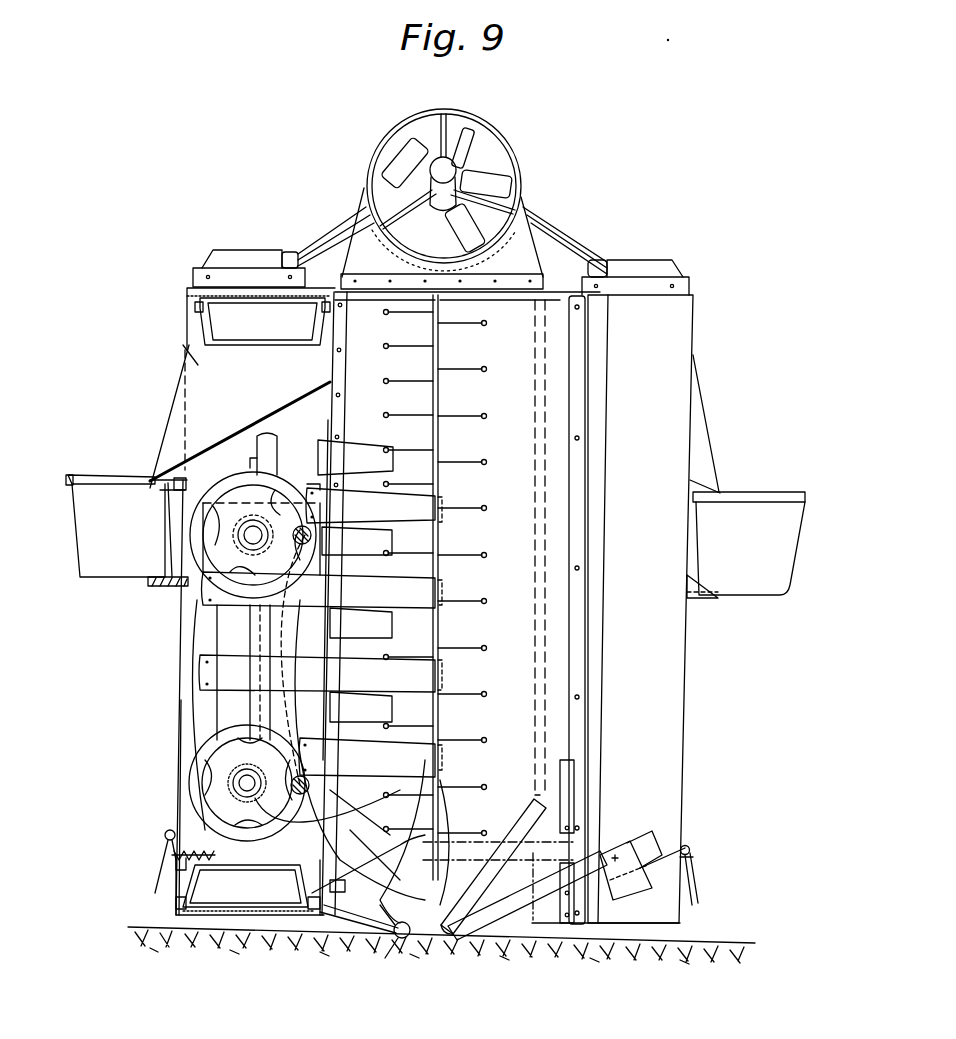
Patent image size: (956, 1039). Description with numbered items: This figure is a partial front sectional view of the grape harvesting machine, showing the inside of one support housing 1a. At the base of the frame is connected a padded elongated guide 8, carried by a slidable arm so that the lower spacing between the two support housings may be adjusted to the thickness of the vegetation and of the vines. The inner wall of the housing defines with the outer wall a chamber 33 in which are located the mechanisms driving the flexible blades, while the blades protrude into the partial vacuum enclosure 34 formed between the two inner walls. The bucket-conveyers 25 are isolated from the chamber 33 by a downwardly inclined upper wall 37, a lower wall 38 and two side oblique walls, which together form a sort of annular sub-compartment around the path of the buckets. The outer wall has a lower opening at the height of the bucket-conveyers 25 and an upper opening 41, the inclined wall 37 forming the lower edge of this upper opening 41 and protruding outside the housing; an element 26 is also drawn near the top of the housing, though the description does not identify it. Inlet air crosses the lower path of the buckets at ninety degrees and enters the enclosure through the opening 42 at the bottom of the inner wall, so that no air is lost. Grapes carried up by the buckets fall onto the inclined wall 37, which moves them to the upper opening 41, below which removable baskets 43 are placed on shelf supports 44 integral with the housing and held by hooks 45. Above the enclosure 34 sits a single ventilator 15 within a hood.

The ventilator 15 is at (500, 155).
The upper inspection window 26 is at (225, 330).
The upper opening 41 is at (176, 410).
The downwardly inclined upper wall 37 is at (225, 437).
The enclosure 34 is at (352, 412).
The hooks 45 is at (160, 497).
The removable baskets 43 is at (80, 570).
The shelf supports 44 is at (165, 588).
The chamber 33 is at (190, 608).
The support housing 1a is at (185, 722).
The lower wall 38 is at (312, 838).
The opening 42 is at (340, 885).
The bucket-conveyers 25 is at (220, 880).
The padded elongated guide 8 is at (398, 940).